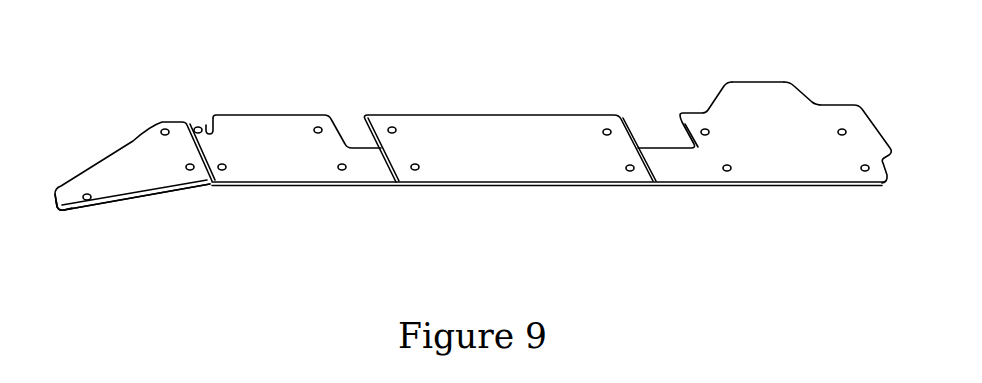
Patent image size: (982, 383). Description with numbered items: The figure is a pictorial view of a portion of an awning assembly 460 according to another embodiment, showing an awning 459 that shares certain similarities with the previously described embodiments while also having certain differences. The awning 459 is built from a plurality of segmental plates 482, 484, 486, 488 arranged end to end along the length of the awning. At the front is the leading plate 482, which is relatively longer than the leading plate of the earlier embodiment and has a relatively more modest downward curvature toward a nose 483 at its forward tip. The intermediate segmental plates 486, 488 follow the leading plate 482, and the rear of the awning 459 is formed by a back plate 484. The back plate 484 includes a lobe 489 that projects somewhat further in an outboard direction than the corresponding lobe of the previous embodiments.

The awning 459 is at (105, 146).
The awning assembly 460 is at (179, 76).
The leading plate 482 is at (143, 196).
The nose 483 is at (57, 207).
The back plate 484 is at (790, 186).
The segmental plate 486 is at (280, 186).
The segmental plate 488 is at (528, 186).
The lobe 489 is at (757, 82).